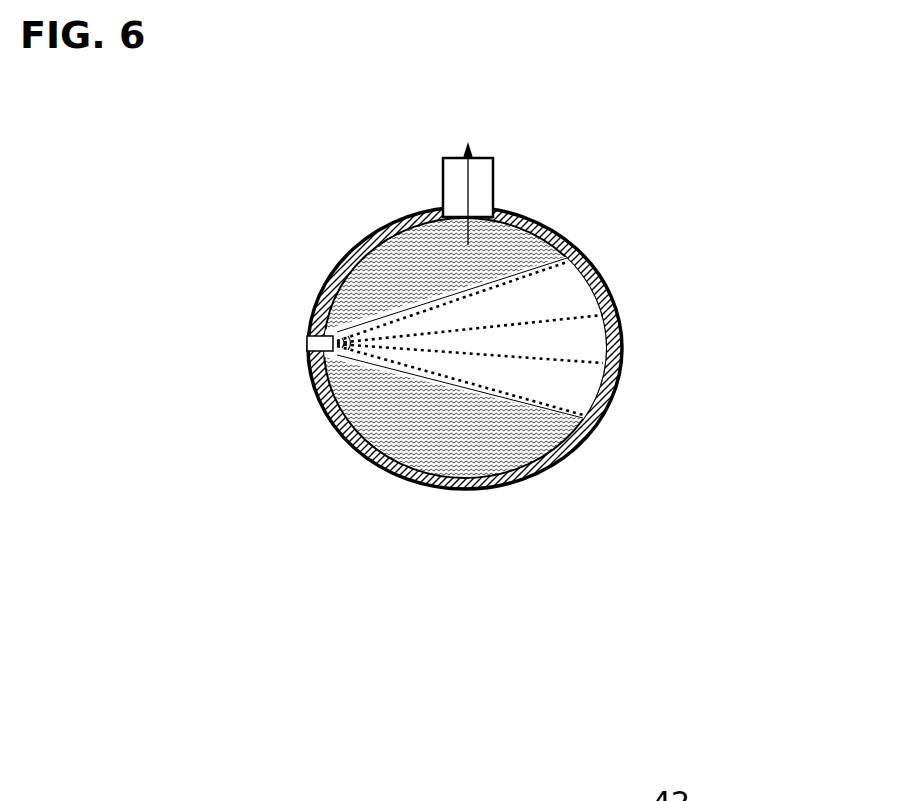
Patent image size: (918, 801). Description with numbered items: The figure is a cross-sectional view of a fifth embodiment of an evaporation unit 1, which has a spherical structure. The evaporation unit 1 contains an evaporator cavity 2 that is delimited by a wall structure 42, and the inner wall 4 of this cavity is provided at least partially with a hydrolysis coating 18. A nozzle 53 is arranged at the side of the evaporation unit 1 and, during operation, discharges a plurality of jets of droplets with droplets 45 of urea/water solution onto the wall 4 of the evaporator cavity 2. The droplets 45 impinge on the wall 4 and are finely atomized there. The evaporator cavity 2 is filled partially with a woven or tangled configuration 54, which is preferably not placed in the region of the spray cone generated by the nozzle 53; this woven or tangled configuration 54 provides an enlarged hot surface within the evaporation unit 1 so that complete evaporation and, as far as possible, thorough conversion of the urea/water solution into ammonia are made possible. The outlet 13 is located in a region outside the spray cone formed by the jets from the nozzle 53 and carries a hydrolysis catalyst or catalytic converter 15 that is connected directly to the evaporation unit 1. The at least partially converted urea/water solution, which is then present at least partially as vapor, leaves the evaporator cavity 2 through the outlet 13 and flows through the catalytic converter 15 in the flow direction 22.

The evaporation unit 1 is at (476, 333).
The evaporator cavity 2 is at (553, 427).
The inner wall 4 is at (588, 413).
The outlet 13 is at (462, 212).
The hydrolysis catalytic converter 15 is at (480, 185).
The hydrolysis coating 18 is at (608, 357).
The flow direction 22 is at (462, 146).
The wall structure 42 is at (622, 317).
The droplets 45 is at (465, 386).
The nozzle 53 is at (308, 343).
The woven or tangled configuration 54 is at (423, 425).